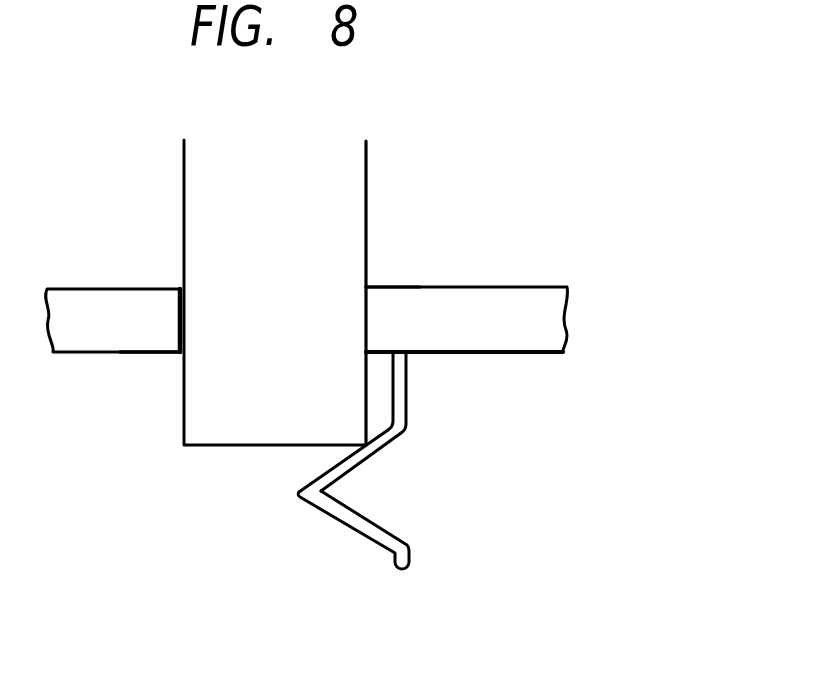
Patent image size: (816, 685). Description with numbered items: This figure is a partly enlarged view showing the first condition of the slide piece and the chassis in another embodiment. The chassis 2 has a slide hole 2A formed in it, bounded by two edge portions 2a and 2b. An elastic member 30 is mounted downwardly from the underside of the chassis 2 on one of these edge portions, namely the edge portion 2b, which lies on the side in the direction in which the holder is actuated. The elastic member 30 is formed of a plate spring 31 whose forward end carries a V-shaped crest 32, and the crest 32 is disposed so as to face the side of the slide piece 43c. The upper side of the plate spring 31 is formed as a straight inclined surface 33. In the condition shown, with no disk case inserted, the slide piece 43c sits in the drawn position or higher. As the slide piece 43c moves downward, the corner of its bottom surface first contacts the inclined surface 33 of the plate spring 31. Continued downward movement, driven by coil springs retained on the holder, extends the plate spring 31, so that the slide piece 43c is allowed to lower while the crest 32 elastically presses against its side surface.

The chassis 2 is at (512, 297).
The edge portion of the slide hole 2a is at (180, 312).
The slide hole 2A is at (182, 352).
The edge portion of the slide hole 2b is at (366, 295).
The slide piece 43c is at (357, 187).
The elastic member 30 is at (380, 460).
The plate spring 31 is at (408, 380).
The V-shaped crest 32 is at (300, 495).
The inclined surface 33 is at (322, 472).